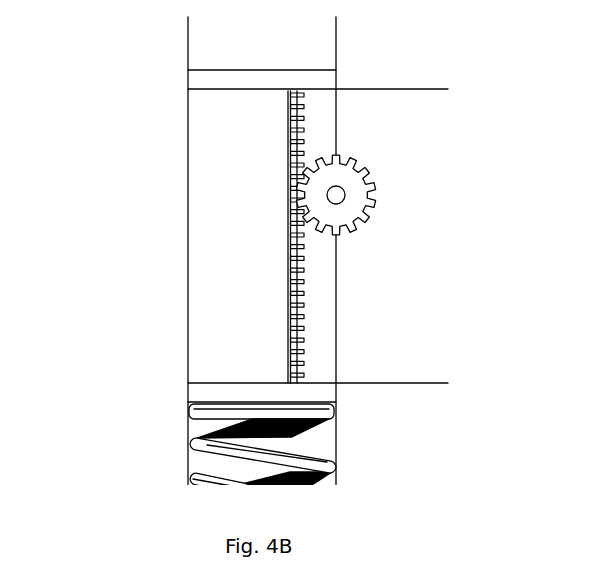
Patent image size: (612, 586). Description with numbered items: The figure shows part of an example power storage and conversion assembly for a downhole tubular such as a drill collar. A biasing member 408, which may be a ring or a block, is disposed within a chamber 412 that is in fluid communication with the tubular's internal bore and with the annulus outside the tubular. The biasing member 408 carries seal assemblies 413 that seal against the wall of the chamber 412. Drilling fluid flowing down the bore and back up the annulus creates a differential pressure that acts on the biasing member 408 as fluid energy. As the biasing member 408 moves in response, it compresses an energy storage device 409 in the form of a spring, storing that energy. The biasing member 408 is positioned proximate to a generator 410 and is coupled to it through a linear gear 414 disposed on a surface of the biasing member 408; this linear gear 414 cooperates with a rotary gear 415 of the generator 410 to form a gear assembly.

The biasing member 408 is at (222, 247).
The energy storage device 409 is at (322, 458).
The generator 410 is at (384, 89).
The chamber 412 is at (200, 468).
The seal assemblies 413 is at (188, 80).
The linear gear 414 is at (303, 263).
The rotary gear 415 is at (363, 165).